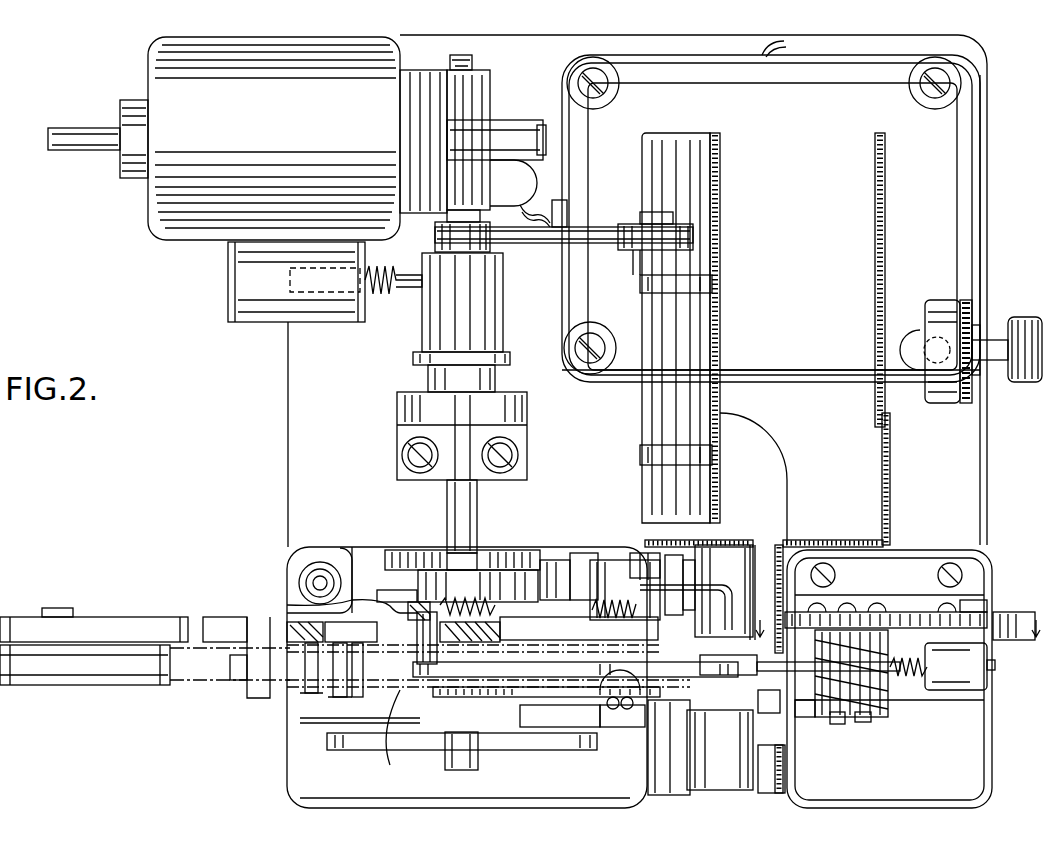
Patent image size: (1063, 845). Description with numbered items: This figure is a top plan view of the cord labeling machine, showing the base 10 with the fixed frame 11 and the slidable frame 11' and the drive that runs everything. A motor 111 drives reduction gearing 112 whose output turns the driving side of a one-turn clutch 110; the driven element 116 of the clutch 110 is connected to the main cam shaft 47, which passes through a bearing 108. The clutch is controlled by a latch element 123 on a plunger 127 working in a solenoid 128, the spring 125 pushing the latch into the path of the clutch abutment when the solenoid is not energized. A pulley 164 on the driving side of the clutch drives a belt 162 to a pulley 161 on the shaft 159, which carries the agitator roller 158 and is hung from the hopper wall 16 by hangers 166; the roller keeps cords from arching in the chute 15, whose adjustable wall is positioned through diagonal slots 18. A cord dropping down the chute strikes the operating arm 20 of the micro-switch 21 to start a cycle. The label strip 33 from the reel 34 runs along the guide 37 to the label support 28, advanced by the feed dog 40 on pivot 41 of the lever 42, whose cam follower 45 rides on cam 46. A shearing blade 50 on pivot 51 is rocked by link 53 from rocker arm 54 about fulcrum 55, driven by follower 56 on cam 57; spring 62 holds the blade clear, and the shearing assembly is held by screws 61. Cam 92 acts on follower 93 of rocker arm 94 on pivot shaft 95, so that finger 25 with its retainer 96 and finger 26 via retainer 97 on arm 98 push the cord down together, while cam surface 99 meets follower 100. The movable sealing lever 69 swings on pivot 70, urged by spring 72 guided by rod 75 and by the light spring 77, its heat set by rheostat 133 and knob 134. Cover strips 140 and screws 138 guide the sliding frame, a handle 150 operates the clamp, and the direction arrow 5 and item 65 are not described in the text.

The base 10 is at (275, 793).
The motor 111 is at (160, 237).
The reduction gearing 112 is at (503, 97).
The latch element 123 is at (437, 232).
The belt 162 is at (602, 236).
The pulley 164 is at (497, 251).
The pulley 161 is at (630, 262).
The side wall 16 is at (722, 331).
The shaft 159 is at (658, 395).
The hangers 166 is at (641, 290).
The clutch 110 is at (512, 308).
The driven element 116 is at (420, 330).
The bearing 108 is at (500, 395).
The cam shaft 47 is at (448, 506).
The solenoid 128 is at (260, 320).
The plunger 127 is at (283, 334).
The spring 125 is at (380, 306).
The cord moving finger 26 is at (741, 580).
The diagonal slots 18 is at (885, 456).
The rheostat 133 is at (935, 402).
The knob 134 is at (1024, 384).
The frame 11 is at (471, 677).
The lever 42 is at (296, 600).
The cam follower 45 is at (377, 597).
The cam 46 is at (425, 583).
The cam 57 is at (410, 554).
The cam follower 56 is at (483, 556).
The arm 98 is at (547, 613).
The pivot 41 is at (417, 635).
The feed dog 40 is at (412, 672).
The agitator roller 158 is at (590, 666).
The fulcrum 55 is at (545, 560).
The rocker arm 54 is at (575, 562).
The spring 62 is at (602, 590).
The screws 61 is at (612, 618).
The link 53 is at (642, 556).
The shearing blade 50 is at (676, 590).
The pivot 51 is at (697, 580).
The retainer 97 is at (718, 566).
The label support 28 is at (742, 630).
The chute 15 is at (779, 556).
The cover strips 140 is at (906, 560).
The screws 138 is at (829, 563).
The frame 11' is at (993, 585).
The handle 150 is at (1008, 620).
The direction arrow 5 is at (901, 615).
The rod 75 is at (992, 672).
The lever 69 is at (872, 705).
The spring 72 is at (920, 692).
The micro-switch 21 is at (980, 720).
The operating arm 20 is at (798, 712).
The block 65 is at (793, 720).
The spring 77 is at (840, 718).
The pivot 70 is at (860, 722).
The reel 34 is at (88, 688).
The label strip 33 is at (188, 686).
The cam 92 is at (358, 752).
The guide 37 is at (360, 736).
The cam follower 93 is at (450, 742).
The pivot shaft 95 is at (560, 737).
The cord retainer 96 is at (616, 727).
The rocker arm 94 is at (626, 730).
The cam surface 99 is at (702, 708).
The cord moving finger 25 is at (712, 732).
The cam follower 100 is at (766, 707).